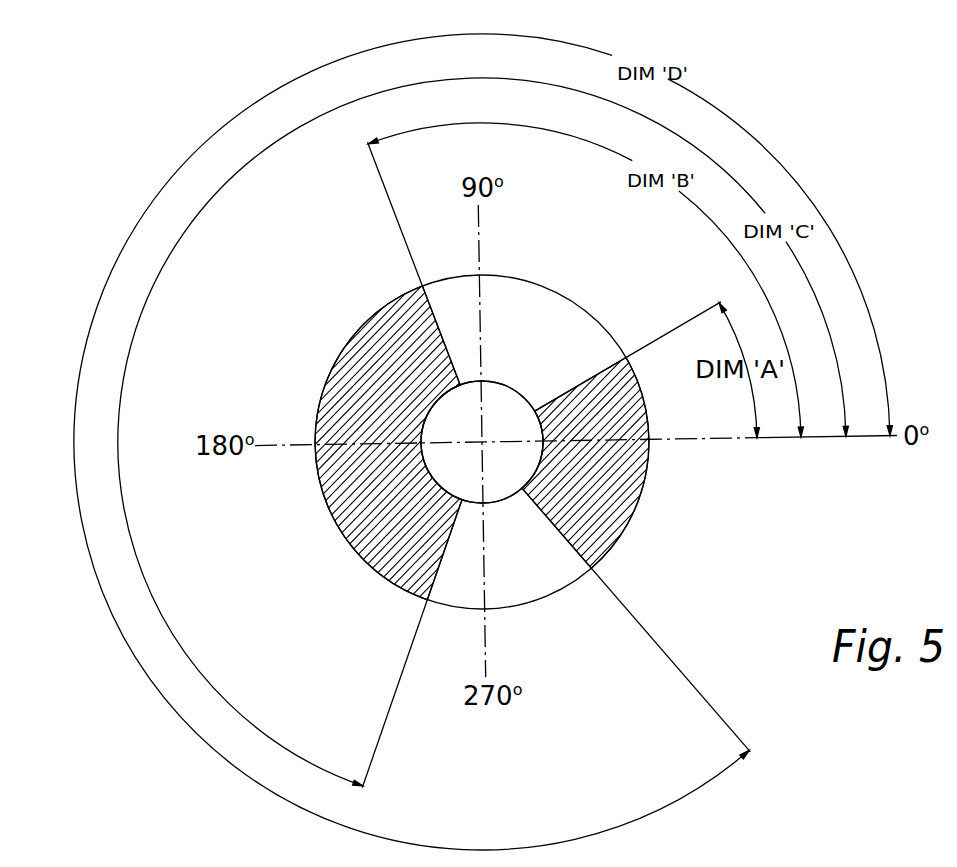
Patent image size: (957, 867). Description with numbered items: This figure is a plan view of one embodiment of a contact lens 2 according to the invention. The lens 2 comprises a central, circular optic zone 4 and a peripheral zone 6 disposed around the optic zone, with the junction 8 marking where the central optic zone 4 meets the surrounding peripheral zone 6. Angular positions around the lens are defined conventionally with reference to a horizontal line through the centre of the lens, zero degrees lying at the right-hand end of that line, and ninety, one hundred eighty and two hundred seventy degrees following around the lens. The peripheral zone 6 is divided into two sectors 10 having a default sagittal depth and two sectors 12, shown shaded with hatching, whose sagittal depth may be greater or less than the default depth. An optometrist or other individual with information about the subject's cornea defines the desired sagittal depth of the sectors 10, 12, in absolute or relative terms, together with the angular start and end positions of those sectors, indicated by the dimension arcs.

The lens 2 is at (540, 283).
The optic zone 4 is at (440, 418).
The peripheral zone 6 is at (543, 540).
The junction 8 is at (517, 390).
The sectors of default sagittal depth 10 is at (435, 288).
The sectors of non-default sagittal depth 12 is at (583, 460).